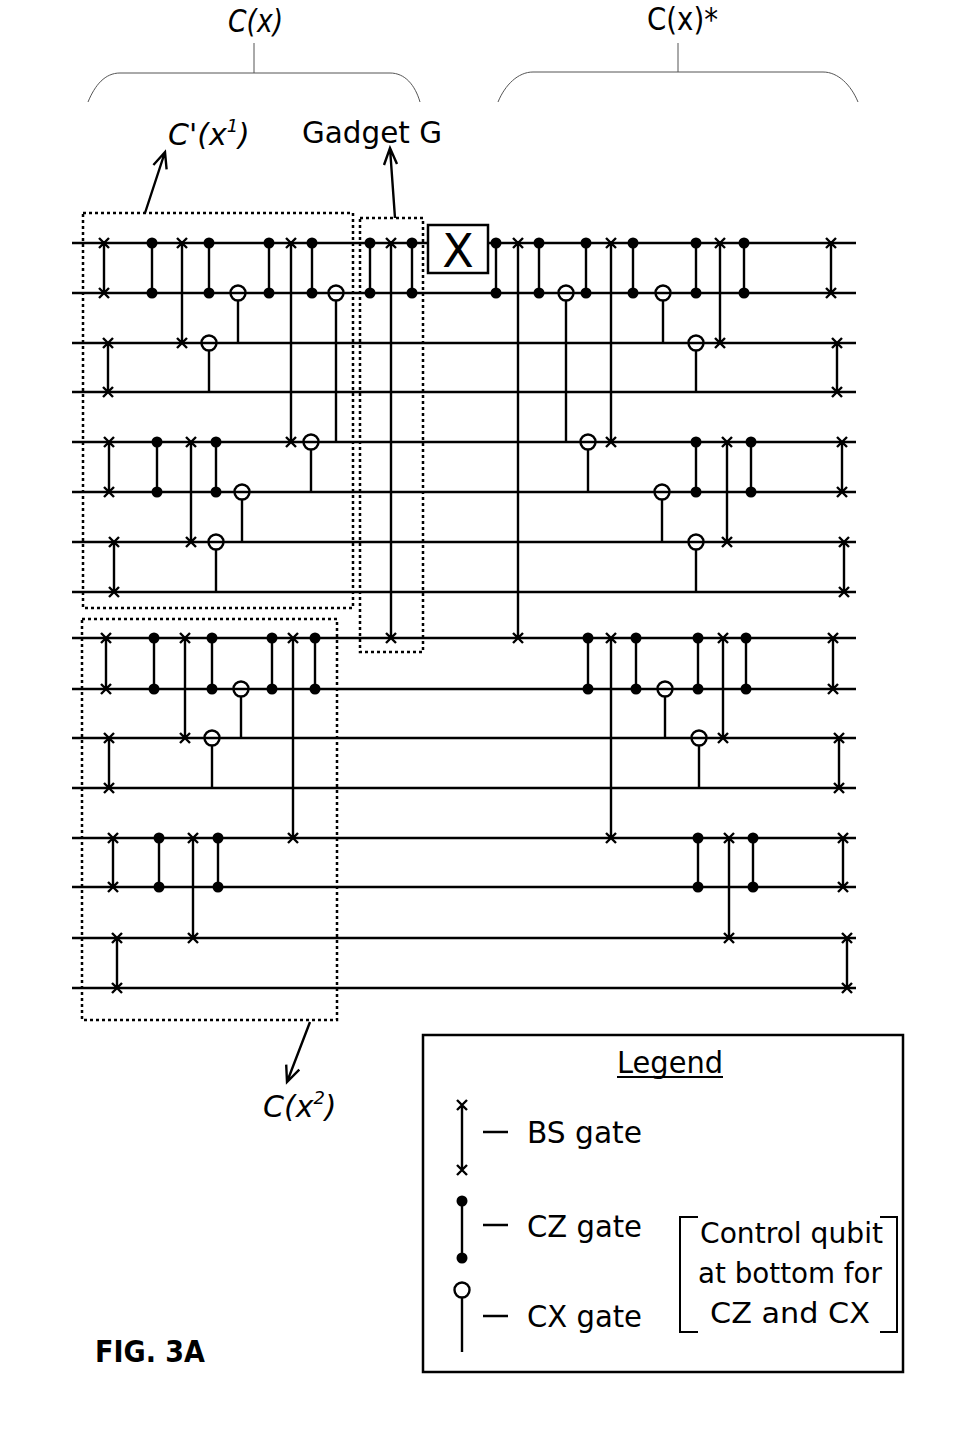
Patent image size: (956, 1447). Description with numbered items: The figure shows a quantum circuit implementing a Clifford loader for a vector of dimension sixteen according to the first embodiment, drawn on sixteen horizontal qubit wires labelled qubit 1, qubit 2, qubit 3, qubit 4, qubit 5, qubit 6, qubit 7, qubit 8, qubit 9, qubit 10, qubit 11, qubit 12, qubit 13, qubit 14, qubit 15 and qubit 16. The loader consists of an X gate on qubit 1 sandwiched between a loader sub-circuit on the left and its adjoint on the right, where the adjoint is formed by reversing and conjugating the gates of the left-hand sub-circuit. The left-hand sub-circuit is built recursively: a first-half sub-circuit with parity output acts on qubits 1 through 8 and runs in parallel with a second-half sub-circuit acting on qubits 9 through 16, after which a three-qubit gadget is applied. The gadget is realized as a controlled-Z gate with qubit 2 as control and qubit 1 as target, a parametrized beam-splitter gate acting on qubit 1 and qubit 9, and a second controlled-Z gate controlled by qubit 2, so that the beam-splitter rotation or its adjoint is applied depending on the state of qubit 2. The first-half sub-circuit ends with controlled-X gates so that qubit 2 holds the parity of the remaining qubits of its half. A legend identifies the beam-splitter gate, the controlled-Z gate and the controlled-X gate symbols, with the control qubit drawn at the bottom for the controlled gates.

The qubit 1 is at (434, 238).
The qubit 2 is at (434, 288).
The qubit 3 is at (434, 338).
The qubit 4 is at (434, 387).
The qubit 5 is at (434, 437).
The qubit 6 is at (434, 487).
The qubit 7 is at (434, 537).
The qubit 8 is at (434, 587).
The qubit 9 is at (434, 633).
The qubit 10 is at (434, 684).
The qubit 11 is at (434, 733).
The qubit 12 is at (434, 783).
The qubit 13 is at (434, 833).
The qubit 14 is at (434, 882).
The qubit 15 is at (434, 933).
The qubit 16 is at (434, 983).